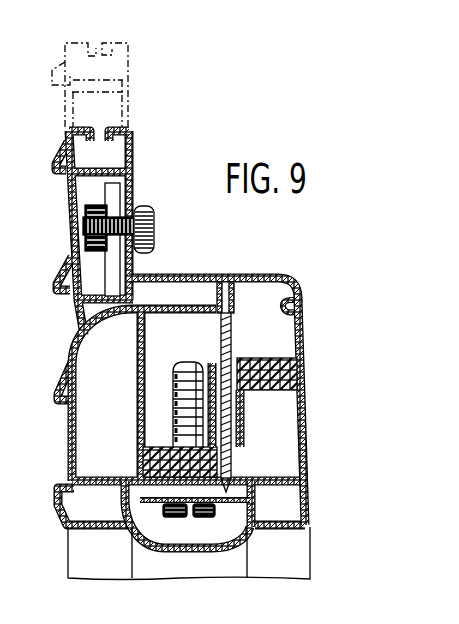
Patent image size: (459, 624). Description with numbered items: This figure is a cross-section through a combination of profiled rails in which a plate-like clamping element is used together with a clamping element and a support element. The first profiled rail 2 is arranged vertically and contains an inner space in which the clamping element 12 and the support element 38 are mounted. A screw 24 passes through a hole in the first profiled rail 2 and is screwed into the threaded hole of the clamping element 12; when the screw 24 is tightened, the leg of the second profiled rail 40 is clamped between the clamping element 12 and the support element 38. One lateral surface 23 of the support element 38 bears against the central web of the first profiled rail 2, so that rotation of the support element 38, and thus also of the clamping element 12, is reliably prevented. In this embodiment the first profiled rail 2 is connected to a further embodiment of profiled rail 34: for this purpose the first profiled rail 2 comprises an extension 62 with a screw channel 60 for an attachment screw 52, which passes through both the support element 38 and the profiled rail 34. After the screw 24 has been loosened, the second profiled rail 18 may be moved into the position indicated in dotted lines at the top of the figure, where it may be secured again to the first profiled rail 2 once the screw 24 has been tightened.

The first profiled rail 2 is at (134, 154).
The clamping element 12 is at (112, 198).
The second profiled rail 18 is at (112, 130).
The lateral surface 23 is at (143, 462).
The screw 24 is at (153, 226).
The profiled rail 34 is at (282, 506).
The support element 38 is at (303, 352).
The second profiled rail 40 is at (303, 330).
The attachment screw 52 is at (248, 421).
The screw channel 60 is at (240, 312).
The extension 62 is at (197, 275).